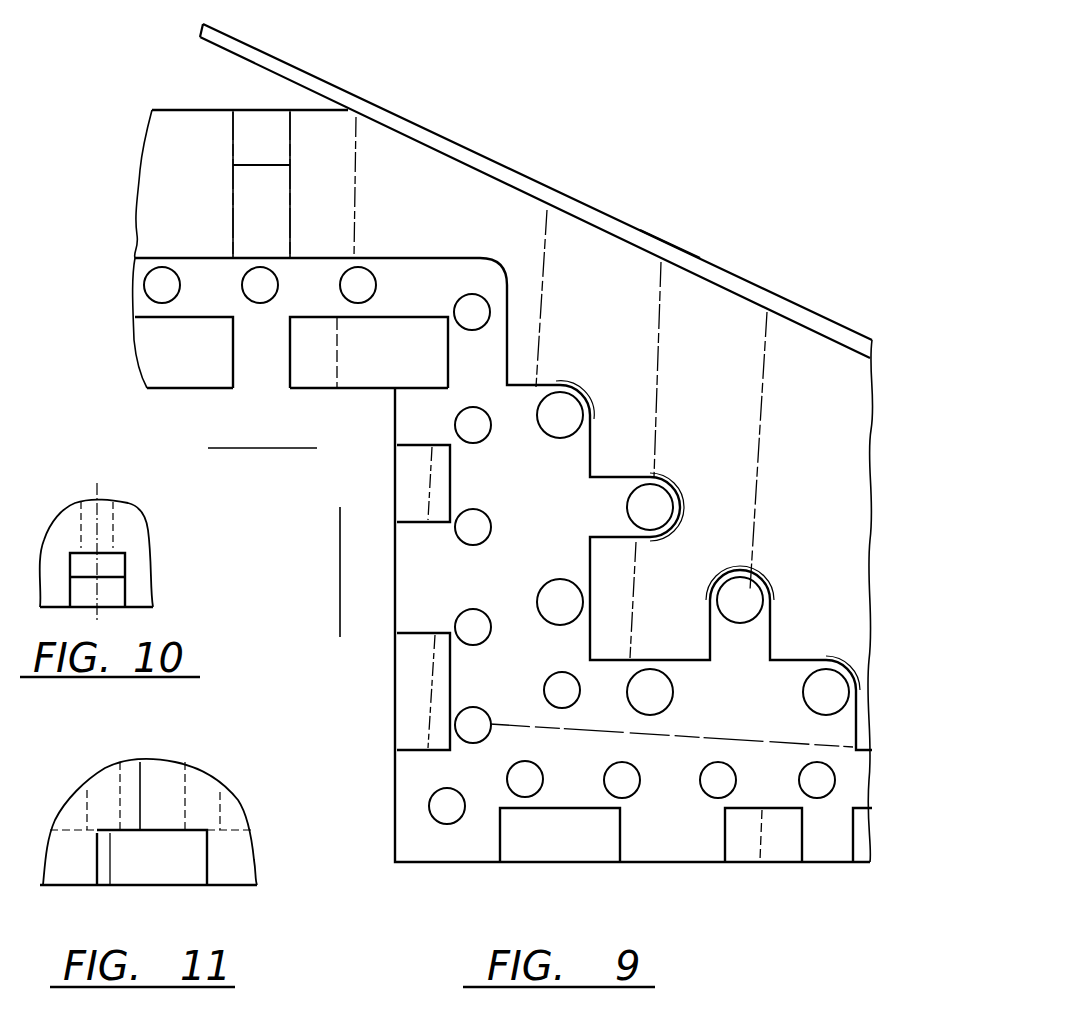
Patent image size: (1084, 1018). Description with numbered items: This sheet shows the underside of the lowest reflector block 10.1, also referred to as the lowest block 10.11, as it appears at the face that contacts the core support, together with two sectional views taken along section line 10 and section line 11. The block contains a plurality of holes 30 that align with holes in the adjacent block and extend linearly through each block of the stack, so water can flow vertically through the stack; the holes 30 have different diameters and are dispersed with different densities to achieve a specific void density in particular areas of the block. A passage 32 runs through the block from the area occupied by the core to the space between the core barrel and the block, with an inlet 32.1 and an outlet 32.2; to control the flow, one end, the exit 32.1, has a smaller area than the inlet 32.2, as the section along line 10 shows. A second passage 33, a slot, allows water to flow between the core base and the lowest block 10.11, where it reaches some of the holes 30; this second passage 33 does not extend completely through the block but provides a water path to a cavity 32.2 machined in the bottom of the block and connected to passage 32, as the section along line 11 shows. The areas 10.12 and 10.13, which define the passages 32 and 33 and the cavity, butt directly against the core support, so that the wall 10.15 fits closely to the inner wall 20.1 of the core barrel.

In FIG. 9, the section line 10— 10 is at (317, 420).
In FIG. 9, the lowest reflector block 10.1 is at (570, 217).
In FIG. 9, the lowest block 10.11 is at (633, 261).
In FIG. 9, the area defining the passages 10.12 is at (407, 466).
In FIG. 11, the area defining the passages 10.12 is at (72, 873).
In FIG. 9, the area defining the passages 10.13 is at (675, 325).
In FIG. 9, the wall 10.15 is at (466, 150).
In FIG. 9, the section line 11— 11 is at (385, 637).
In FIG. 9, the inner wall of the core barrel 20.1 is at (653, 243).
In FIG. 9, the holes 30 is at (163, 298).
In FIG. 9, the passage 32 is at (270, 366).
In FIG. 10, the passage 32 is at (113, 585).
In FIG. 9, the inlet of the passage 32.1 is at (246, 108).
In FIG. 9, the outlet of the passage 32.2 is at (238, 352).
In FIG. 10, the outlet of the passage 32.2 is at (75, 588).
In FIG. 9, the second passage 33 is at (413, 622).
In FIG. 11, the second passage 33 is at (178, 867).